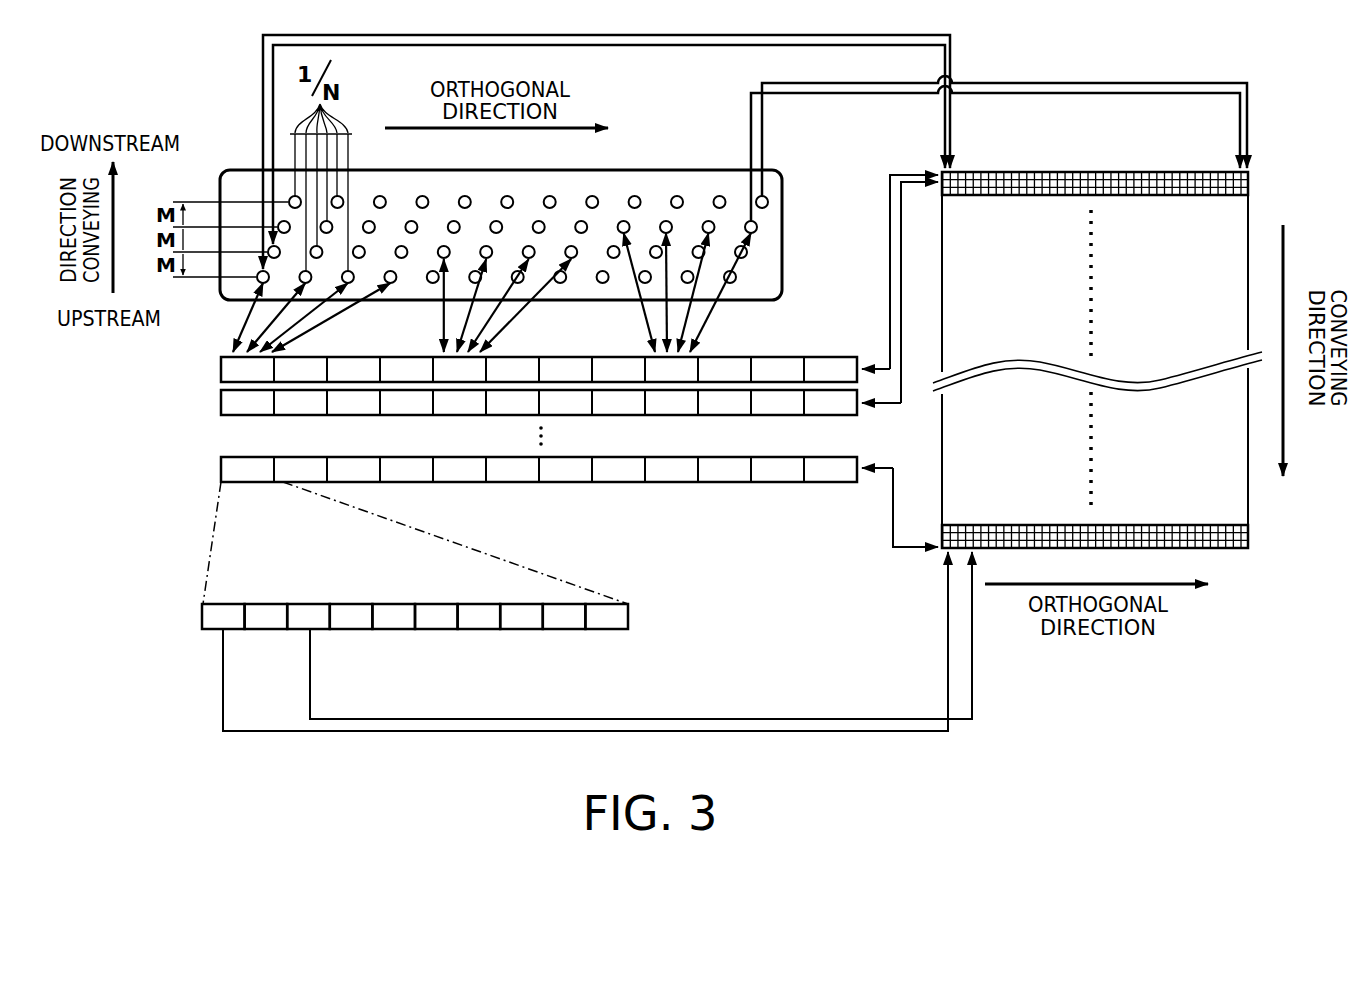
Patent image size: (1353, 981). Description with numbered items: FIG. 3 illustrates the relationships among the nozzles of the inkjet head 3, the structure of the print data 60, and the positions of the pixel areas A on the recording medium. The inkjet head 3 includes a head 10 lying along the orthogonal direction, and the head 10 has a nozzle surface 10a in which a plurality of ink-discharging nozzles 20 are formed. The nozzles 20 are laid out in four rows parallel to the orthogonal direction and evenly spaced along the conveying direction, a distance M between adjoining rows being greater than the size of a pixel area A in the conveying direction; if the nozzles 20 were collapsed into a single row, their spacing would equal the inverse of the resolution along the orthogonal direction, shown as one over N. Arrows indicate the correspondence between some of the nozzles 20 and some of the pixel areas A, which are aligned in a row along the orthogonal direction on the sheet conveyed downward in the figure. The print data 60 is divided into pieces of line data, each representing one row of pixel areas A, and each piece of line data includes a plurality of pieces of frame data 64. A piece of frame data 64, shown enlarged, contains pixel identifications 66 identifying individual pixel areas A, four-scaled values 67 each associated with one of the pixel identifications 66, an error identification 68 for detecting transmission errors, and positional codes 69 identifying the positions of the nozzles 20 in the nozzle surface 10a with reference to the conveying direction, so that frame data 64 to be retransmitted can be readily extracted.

The inkjet head 3 is at (216, 164).
The head 10 is at (647, 168).
The nozzle surface 10a is at (687, 178).
The nozzles 20 is at (727, 194).
The print data 60 is at (150, 353).
The frame data 64 is at (818, 356).
The pixel identifications 66 is at (222, 602).
The four-scaled values 67 is at (260, 631).
The error identification 68 is at (558, 631).
The positional codes 69 is at (602, 631).
The pixel areas A is at (1250, 175).